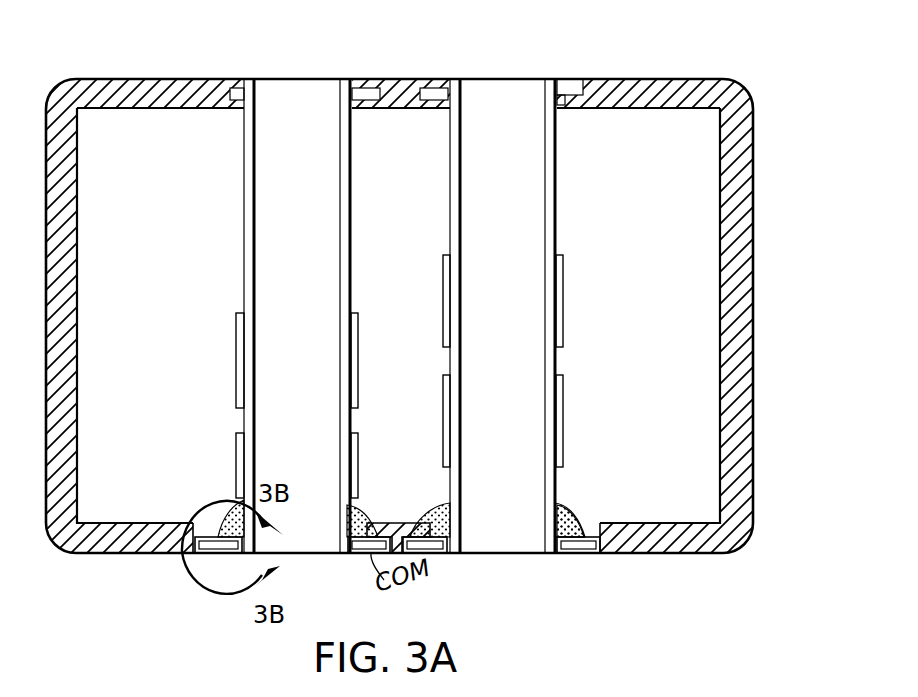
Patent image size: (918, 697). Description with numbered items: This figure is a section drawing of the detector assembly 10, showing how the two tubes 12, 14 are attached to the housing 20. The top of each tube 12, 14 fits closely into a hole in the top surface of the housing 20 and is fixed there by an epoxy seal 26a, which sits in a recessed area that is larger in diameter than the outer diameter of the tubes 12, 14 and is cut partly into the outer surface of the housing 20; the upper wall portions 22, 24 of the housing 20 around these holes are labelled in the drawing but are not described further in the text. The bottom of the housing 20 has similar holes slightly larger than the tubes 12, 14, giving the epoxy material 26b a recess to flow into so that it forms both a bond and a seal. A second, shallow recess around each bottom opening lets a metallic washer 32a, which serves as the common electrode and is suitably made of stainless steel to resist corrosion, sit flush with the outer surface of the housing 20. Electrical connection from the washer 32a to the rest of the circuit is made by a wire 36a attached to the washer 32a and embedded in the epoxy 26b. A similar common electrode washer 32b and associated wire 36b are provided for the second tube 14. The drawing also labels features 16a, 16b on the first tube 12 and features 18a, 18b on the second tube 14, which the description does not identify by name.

The detector assembly 10 is at (759, 80).
The tube 12 is at (310, 191).
The tube 14 is at (517, 191).
The first blade contact 16a is at (243, 356).
The first blade contact 16b is at (243, 463).
The second blade contact 18a is at (556, 285).
The second blade contact 18b is at (556, 416).
The housing 20 is at (650, 88).
The housing top wall portion 22 is at (308, 87).
The housing top wall portion 24 is at (503, 85).
The epoxy seal 26a is at (233, 87).
The epoxy material 26b is at (358, 516).
The metallic washer 32a is at (232, 555).
The common electrode washer 32b is at (578, 556).
The wire 36a is at (233, 532).
The wire 36b is at (575, 522).